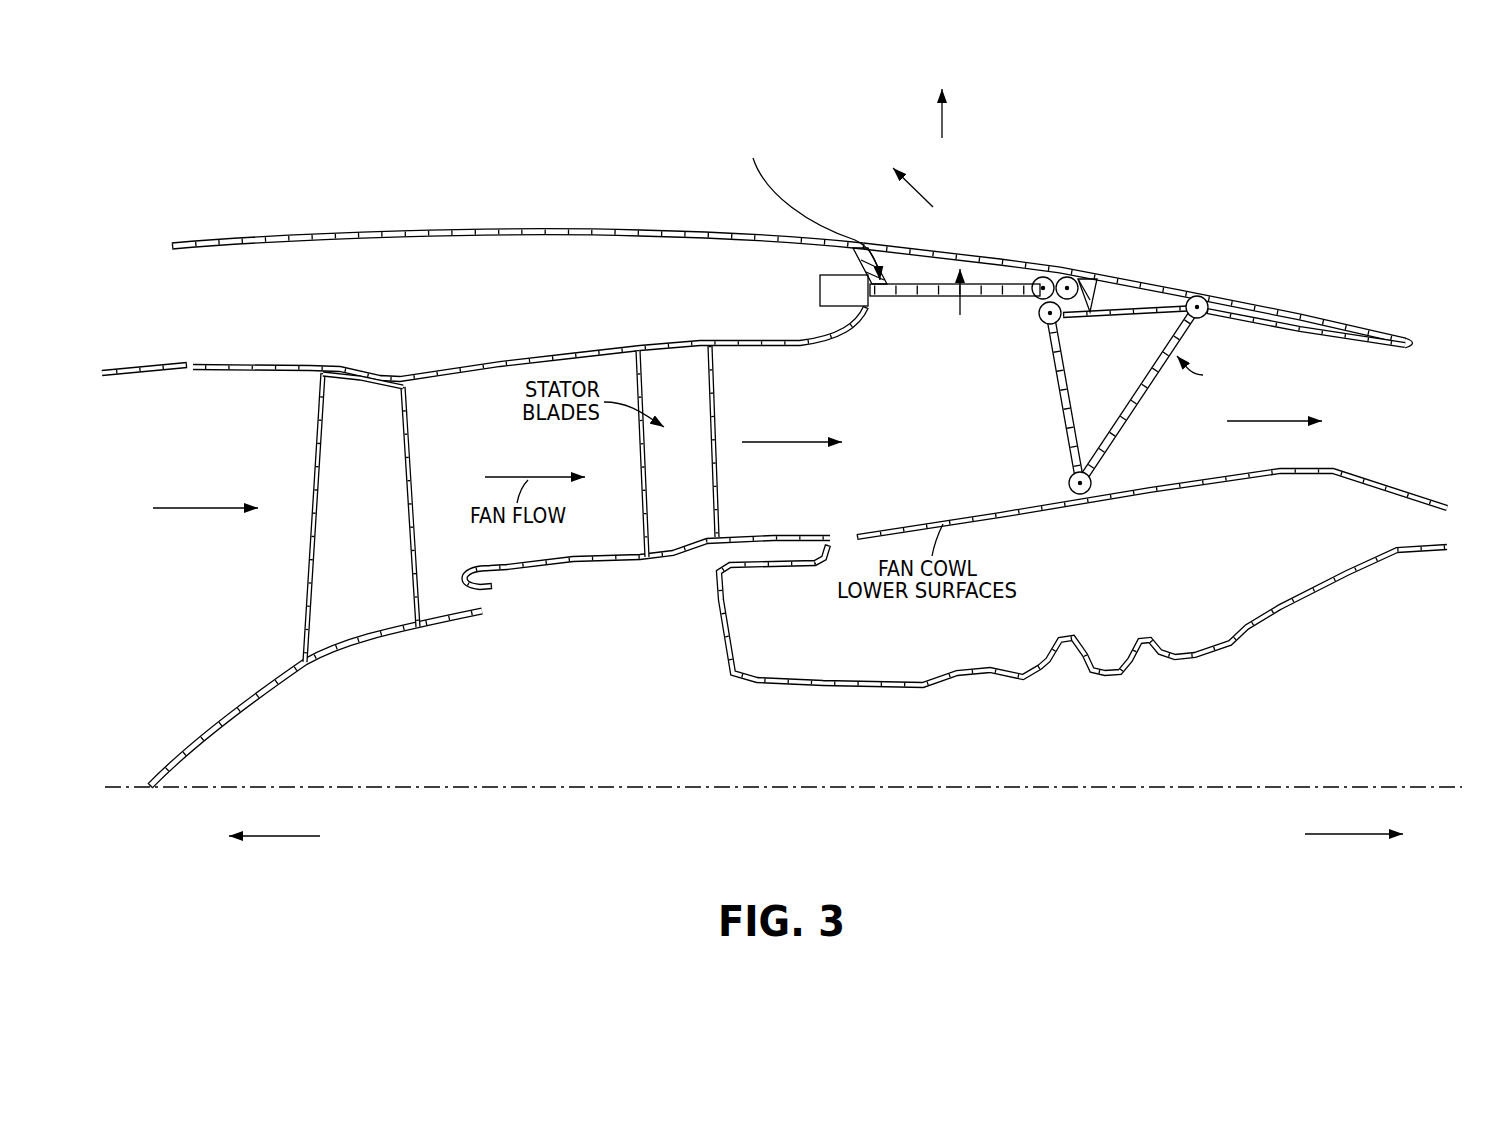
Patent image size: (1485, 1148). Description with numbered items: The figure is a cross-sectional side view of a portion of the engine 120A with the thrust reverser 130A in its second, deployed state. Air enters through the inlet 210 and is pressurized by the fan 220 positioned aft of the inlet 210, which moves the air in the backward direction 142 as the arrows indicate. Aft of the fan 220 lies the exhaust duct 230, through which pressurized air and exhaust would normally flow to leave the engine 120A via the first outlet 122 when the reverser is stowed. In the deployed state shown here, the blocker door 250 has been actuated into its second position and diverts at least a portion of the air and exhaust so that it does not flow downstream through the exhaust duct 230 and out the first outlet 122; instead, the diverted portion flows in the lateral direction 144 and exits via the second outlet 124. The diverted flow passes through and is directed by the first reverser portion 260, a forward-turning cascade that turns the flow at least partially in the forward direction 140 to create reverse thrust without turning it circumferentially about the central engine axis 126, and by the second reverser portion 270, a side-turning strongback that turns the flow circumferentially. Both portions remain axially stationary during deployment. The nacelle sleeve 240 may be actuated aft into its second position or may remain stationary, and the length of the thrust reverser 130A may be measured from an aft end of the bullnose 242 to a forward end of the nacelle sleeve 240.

The engine 120A is at (264, 152).
The first outlet 122 is at (1161, 471).
The second outlet 124 is at (1172, 92).
The central engine axis 126 is at (1348, 786).
The thrust reverser 130A is at (1097, 197).
The forward direction 140 is at (276, 839).
The backward direction 142 is at (1354, 836).
The lateral direction 144 is at (947, 110).
The inlet 210 is at (292, 575).
The fan 220 is at (348, 484).
The exhaust duct 230 is at (543, 447).
The nacelle sleeve 240 is at (987, 325).
The bullnose 242 is at (833, 328).
The blocker door 250 is at (1062, 430).
The first reverser portion 260 is at (913, 297).
The second reverser portion 270 is at (913, 250).